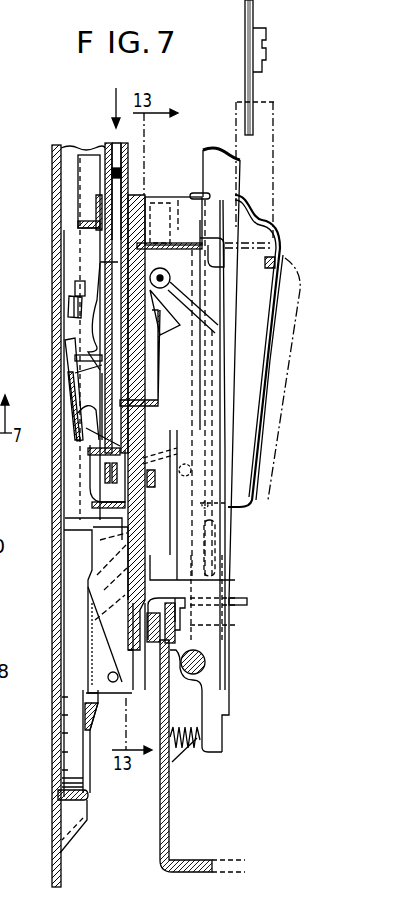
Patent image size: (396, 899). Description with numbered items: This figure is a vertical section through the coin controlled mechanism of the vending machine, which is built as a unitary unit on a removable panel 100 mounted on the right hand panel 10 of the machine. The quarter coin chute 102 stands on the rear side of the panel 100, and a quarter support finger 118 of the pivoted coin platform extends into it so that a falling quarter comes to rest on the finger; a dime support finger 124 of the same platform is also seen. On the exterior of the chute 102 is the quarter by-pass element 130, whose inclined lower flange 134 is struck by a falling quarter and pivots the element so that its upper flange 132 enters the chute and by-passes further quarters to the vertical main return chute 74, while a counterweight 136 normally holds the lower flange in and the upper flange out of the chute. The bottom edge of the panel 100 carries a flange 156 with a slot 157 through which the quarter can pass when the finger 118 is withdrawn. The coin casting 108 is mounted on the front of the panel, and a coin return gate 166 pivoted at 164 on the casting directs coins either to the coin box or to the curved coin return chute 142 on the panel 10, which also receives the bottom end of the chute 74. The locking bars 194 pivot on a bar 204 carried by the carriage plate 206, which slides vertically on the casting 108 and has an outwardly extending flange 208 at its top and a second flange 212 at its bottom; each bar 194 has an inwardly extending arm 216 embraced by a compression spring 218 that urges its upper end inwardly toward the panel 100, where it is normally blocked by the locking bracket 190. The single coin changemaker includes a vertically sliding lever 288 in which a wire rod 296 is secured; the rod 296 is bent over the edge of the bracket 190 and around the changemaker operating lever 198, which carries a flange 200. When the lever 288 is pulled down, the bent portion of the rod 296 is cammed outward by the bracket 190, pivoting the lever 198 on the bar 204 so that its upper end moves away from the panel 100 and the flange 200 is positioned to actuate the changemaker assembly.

The right hand panel 10 is at (55, 190).
The vertical main return chute 74 is at (88, 178).
The removable panel 100 is at (130, 192).
The quarter coin chute 102 is at (112, 145).
The coin casting 108 is at (150, 598).
The quarter support finger 118 is at (110, 452).
The dime support finger 124 is at (78, 414).
The quarter by-pass element 130 is at (97, 287).
The upper flange 132 is at (118, 262).
The lower flange 134 is at (80, 376).
The counterweight 136 is at (68, 308).
The curved coin return chute 142 is at (88, 778).
The flange 156 is at (92, 492).
The slot 157 is at (108, 480).
The pivot 164 is at (114, 685).
The coin return gate 166 is at (102, 655).
The locking bracket 190 is at (258, 240).
The locking bar 194 is at (222, 520).
The changemaker operating lever 198 is at (240, 175).
The flange 200 is at (203, 150).
The bar 204 is at (182, 674).
The carriage plate 206 is at (169, 806).
The outwardly extending flange 208 is at (248, 601).
The second flange 212 is at (180, 862).
The inwardly extending arm 216 is at (195, 752).
The compression spring 218 is at (185, 723).
The lever 288 is at (190, 213).
The wire rod 296 is at (270, 338).